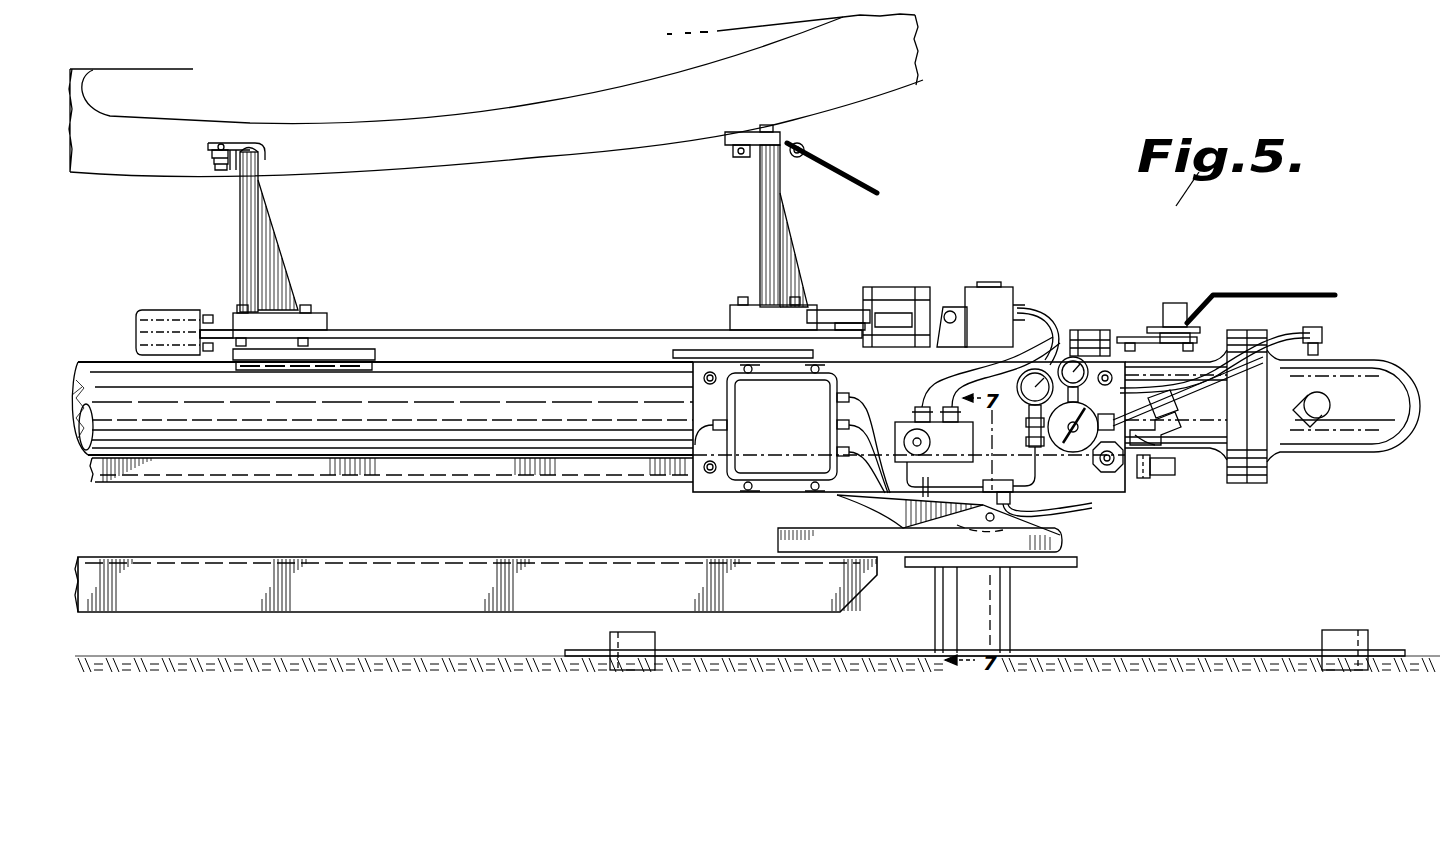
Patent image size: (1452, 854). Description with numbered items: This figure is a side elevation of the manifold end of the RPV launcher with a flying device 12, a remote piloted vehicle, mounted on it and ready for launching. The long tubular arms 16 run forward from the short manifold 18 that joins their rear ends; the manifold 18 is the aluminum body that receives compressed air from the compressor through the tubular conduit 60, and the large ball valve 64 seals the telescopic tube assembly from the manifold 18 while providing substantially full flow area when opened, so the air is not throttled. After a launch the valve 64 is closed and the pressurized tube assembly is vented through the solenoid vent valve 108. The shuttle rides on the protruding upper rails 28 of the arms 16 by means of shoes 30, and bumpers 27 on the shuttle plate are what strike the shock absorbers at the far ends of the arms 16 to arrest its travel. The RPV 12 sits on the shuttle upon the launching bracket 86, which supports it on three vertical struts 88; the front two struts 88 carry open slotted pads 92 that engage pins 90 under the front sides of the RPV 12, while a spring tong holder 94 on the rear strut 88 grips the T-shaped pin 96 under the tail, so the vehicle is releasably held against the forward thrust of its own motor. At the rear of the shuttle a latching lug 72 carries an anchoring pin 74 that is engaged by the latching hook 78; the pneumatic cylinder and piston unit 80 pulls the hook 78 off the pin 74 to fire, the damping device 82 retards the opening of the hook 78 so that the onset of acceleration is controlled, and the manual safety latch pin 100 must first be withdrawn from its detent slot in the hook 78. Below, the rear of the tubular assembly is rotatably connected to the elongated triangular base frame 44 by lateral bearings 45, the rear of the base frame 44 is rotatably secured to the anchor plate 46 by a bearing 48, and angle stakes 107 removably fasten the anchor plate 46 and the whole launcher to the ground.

The flying device 12 is at (590, 118).
The tubular arms 16 is at (587, 380).
The manifold 18 is at (1360, 407).
The bumpers 27 is at (165, 322).
The upper rails 28 is at (520, 358).
The shoes 30 is at (363, 350).
The base frame 44 is at (535, 600).
The lateral bearings 45 is at (1003, 517).
The anchor plate 46 is at (1233, 615).
The bearing 48 is at (1022, 562).
The tubular conduit 60 is at (1318, 397).
The ball valve 64 is at (1190, 302).
The latching lug 72 is at (825, 307).
The anchoring pin 74 is at (897, 320).
The latching hook 78 is at (847, 337).
The pneumatic cylinder and piston unit 80 is at (1000, 303).
The damping device 82 is at (890, 293).
The launching bracket 86 is at (229, 244).
The vertical struts 88 is at (250, 207).
The pins 90 is at (212, 158).
The open slotted pads 92 is at (233, 160).
The spring tong holder 94 is at (830, 161).
The T-shaped pin 96 is at (735, 227).
The manual safety latch pin 100 is at (953, 307).
The angle stakes 107 is at (650, 648).
The solenoid vent valve 108 is at (1165, 475).